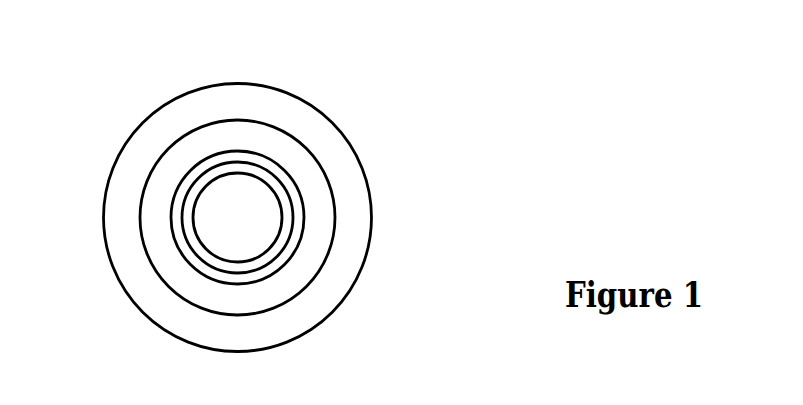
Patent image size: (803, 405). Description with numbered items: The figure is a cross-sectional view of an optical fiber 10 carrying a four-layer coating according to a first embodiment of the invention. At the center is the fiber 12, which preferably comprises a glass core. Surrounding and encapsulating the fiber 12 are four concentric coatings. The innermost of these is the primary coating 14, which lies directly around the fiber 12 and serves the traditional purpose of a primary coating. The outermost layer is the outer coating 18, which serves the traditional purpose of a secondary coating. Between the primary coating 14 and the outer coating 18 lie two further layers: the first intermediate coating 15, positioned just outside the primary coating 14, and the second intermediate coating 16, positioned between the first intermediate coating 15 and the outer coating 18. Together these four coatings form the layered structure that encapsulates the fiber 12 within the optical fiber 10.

The optical fiber 10 is at (410, 186).
The fiber 12 is at (240, 217).
The primary coating 14 is at (193, 195).
The first intermediate coating 15 is at (229, 159).
The second intermediate coating 16 is at (172, 262).
The outer coating 18 is at (295, 320).